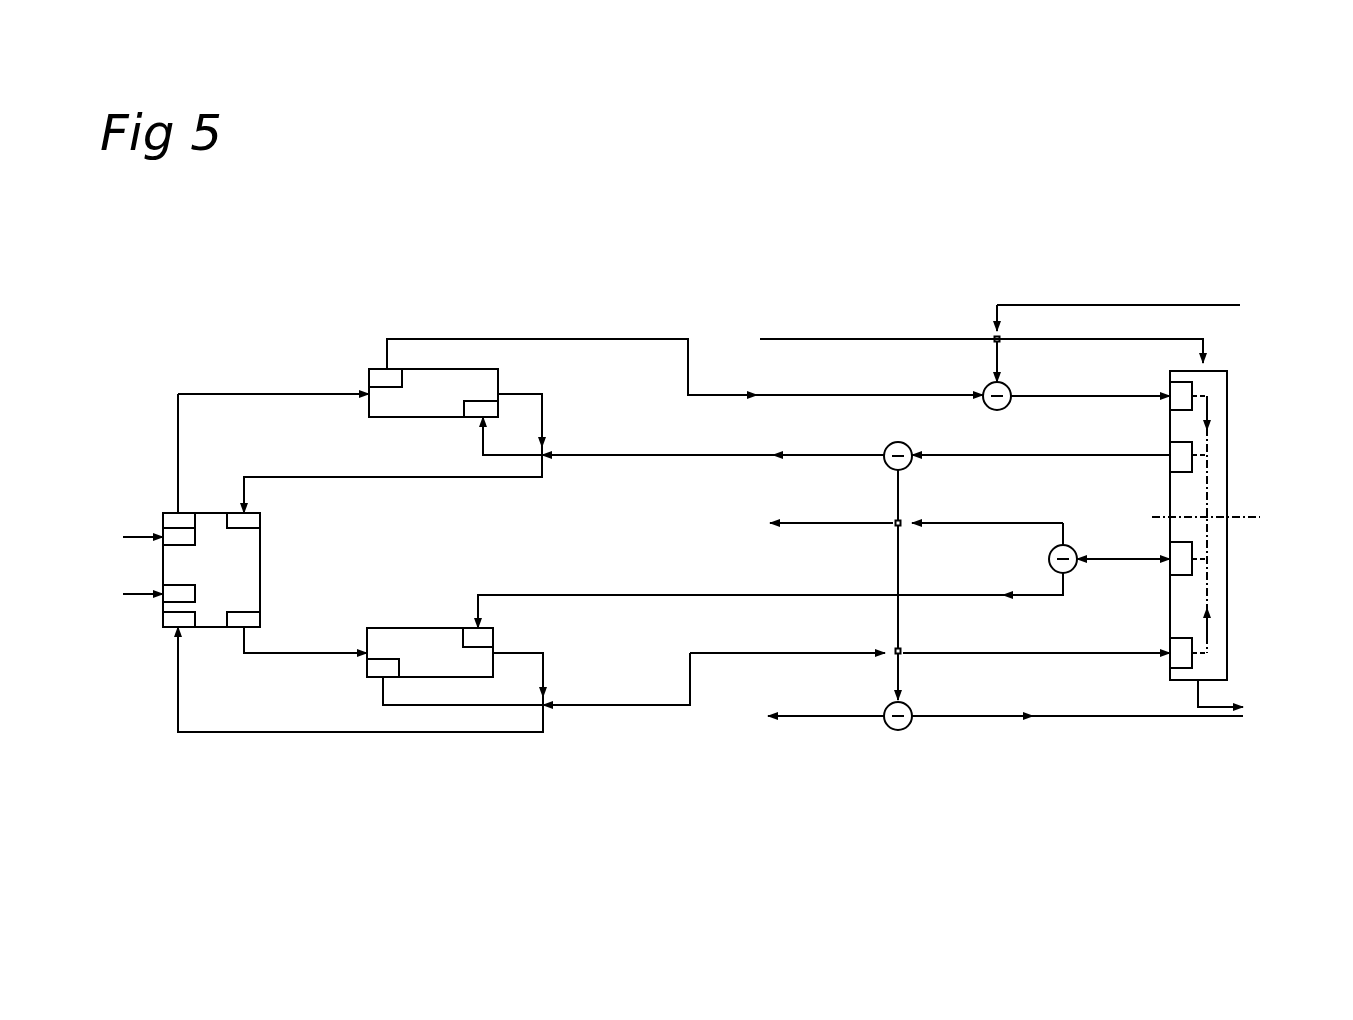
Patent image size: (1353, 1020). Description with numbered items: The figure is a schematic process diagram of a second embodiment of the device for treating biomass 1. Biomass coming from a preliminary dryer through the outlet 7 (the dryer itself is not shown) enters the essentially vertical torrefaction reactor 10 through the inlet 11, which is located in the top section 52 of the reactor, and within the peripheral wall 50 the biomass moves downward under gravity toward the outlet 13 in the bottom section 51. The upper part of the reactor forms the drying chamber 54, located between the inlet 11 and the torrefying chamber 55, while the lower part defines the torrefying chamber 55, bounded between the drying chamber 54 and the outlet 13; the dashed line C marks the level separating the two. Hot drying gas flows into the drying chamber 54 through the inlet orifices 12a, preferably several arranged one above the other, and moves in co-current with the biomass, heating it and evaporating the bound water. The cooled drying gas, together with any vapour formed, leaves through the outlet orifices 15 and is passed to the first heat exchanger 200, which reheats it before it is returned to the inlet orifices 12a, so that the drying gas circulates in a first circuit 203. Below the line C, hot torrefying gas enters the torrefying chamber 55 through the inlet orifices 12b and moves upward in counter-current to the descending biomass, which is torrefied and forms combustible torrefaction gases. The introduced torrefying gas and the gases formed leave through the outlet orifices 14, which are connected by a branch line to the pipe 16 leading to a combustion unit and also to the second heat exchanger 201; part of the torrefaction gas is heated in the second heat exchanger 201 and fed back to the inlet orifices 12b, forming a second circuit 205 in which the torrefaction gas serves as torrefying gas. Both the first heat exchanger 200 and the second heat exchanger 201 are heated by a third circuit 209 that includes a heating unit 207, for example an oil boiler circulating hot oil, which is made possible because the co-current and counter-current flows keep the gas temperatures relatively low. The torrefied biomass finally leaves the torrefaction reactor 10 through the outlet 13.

The device for treating biomass 1 is at (1249, 252).
The outlet 7 is at (1055, 339).
The torrefaction reactor 10 is at (1222, 447).
The inlet 11 is at (1205, 348).
The inlet orifices 12a is at (1165, 395).
The inlet orifices 12b is at (1165, 652).
The outlet 13 is at (1202, 695).
The outlet orifices 14 is at (1165, 557).
The outlet orifices 15 is at (1165, 455).
The pipe 16 is at (838, 523).
The peripheral wall 50 is at (1228, 508).
The bottom section 51 is at (1178, 681).
The top section 52 is at (1179, 371).
The drying chamber 54 is at (1228, 395).
The torrefying chamber 55 is at (1218, 607).
The first heat exchanger 200 is at (427, 382).
The second heat exchanger 201 is at (450, 668).
The first circuit 203 is at (662, 339).
The second circuit 205 is at (617, 707).
The heating unit 207 is at (243, 567).
The third circuit 209 is at (265, 735).